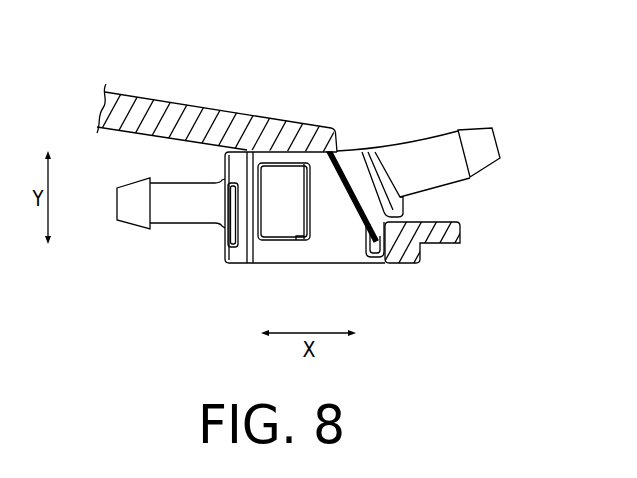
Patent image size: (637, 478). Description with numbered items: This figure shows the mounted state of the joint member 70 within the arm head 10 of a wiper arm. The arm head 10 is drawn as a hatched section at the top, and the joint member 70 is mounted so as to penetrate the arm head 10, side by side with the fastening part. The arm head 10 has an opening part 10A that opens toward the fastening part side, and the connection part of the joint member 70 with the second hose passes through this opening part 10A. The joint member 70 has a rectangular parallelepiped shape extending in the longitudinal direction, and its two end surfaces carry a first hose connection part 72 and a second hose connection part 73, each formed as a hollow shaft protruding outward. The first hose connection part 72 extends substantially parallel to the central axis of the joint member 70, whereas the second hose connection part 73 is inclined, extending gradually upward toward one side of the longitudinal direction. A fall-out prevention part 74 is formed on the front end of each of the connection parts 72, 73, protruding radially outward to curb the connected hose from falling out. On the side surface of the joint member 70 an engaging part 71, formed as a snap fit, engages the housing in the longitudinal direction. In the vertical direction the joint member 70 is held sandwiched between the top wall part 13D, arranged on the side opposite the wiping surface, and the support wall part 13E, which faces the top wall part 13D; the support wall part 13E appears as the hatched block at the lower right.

The arm head 10 is at (216, 100).
The top wall part 13D is at (259, 122).
The opening part 10A is at (345, 146).
The joint member 70 is at (393, 138).
The engaging part 71 is at (283, 223).
The first hose connection part 72 is at (185, 216).
The second hose connection part 73 is at (448, 172).
The fall-out prevention part 74 is at (133, 216).
The support wall part 13E is at (415, 240).